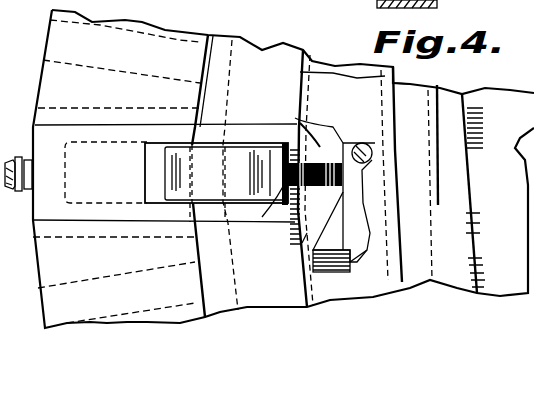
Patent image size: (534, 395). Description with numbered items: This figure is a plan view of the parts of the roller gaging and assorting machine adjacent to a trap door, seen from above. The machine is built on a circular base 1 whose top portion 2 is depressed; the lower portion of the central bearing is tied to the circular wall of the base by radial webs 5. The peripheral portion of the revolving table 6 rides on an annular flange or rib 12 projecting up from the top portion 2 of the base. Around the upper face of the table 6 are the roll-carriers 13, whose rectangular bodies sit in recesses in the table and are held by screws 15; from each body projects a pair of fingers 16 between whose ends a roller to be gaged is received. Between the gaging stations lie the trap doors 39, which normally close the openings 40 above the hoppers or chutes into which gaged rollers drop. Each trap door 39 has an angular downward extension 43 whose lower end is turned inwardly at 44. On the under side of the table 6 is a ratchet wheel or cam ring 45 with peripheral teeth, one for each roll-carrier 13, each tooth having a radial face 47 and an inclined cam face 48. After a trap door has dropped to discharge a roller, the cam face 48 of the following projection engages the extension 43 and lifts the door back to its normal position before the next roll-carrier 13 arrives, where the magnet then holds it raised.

The circular base 1 is at (283, 169).
The top portion 2 is at (296, 128).
The radial webs 5 is at (424, 47).
The revolving table 6 is at (440, 110).
The annular flange or rib 12 is at (433, 193).
The roll-carriers 13 is at (375, 175).
The screws 15 is at (373, 147).
The fingers 16 is at (333, 230).
The trap doors 39 is at (216, 182).
The openings 40 is at (155, 170).
The angular downward extension 43 is at (297, 212).
The inwardly turned lower end portion 44 is at (343, 143).
The ratchet wheel or cam ring 45 is at (357, 257).
The radial face 47 is at (333, 256).
The inclined or cam face 48 is at (327, 218).